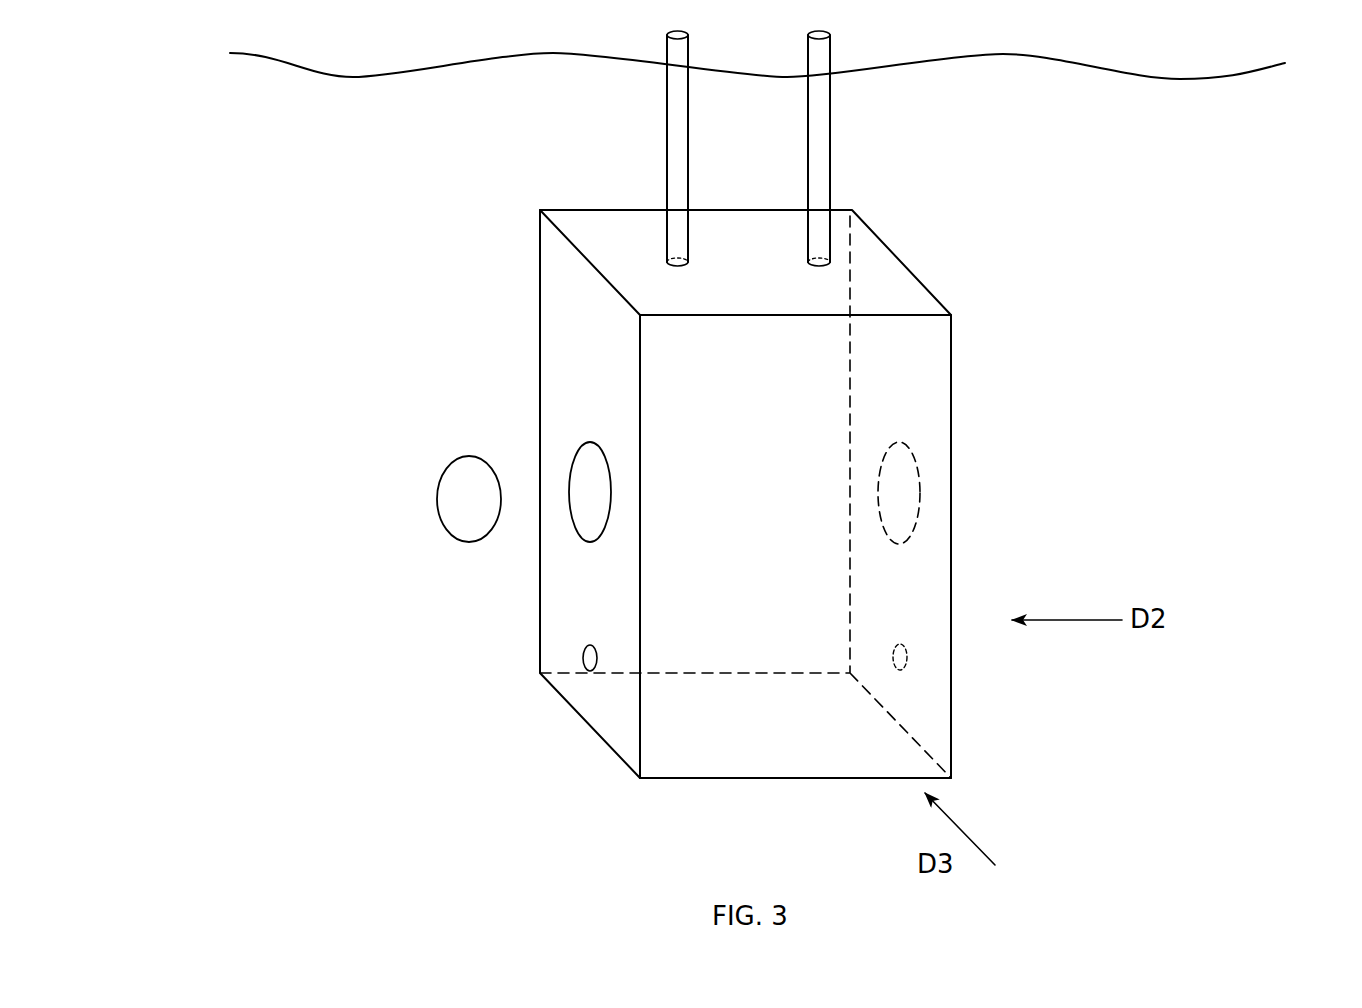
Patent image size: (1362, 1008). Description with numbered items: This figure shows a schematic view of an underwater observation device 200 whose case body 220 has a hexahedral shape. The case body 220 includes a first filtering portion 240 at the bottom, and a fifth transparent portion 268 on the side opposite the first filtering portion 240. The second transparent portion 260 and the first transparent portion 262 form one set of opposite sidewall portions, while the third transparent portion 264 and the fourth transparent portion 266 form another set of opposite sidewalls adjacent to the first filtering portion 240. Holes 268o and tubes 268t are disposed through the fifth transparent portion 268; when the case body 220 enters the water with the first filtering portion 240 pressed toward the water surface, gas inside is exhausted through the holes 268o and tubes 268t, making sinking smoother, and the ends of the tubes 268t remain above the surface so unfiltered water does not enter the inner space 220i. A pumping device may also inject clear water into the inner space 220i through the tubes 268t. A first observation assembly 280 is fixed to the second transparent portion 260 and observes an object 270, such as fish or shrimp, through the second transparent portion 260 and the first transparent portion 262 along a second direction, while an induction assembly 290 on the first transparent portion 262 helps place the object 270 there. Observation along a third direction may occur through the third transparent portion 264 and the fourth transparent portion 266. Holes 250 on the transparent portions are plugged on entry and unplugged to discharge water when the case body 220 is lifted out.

The underwater observation device 200 is at (188, 95).
The case body 220 is at (556, 210).
The inner space 220i is at (748, 263).
The first filtering portion 240 is at (687, 783).
The hole 250 is at (582, 656).
The second transparent portion 260 is at (962, 328).
The first transparent portion 262 is at (583, 592).
The third transparent portion 264 is at (932, 735).
The fourth transparent portion 266 is at (527, 409).
The fifth transparent portion 268 is at (722, 232).
The holes 268o is at (663, 258).
The tubes 268t is at (666, 55).
The object 270 is at (436, 499).
The first observation assembly 280 is at (921, 505).
The induction assembly 290 is at (566, 492).